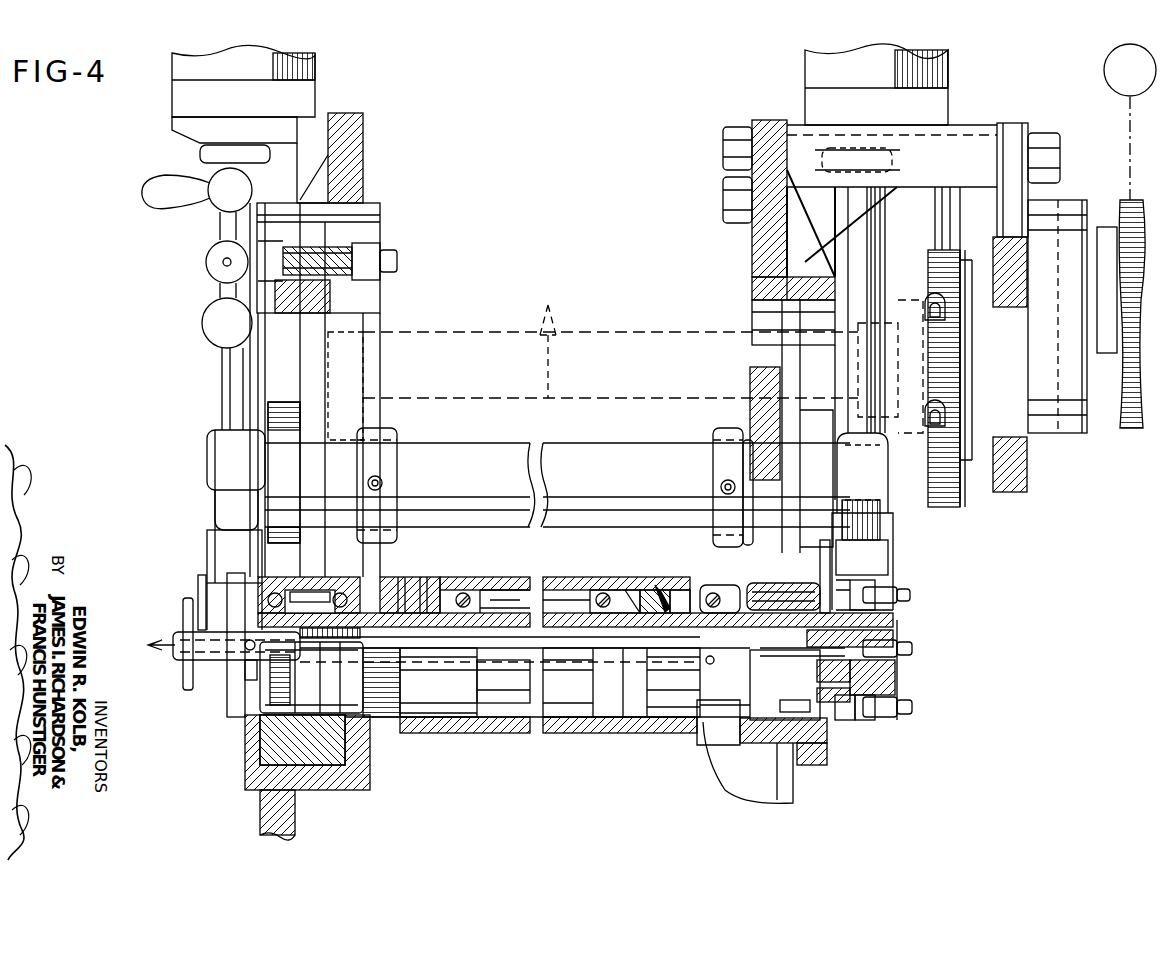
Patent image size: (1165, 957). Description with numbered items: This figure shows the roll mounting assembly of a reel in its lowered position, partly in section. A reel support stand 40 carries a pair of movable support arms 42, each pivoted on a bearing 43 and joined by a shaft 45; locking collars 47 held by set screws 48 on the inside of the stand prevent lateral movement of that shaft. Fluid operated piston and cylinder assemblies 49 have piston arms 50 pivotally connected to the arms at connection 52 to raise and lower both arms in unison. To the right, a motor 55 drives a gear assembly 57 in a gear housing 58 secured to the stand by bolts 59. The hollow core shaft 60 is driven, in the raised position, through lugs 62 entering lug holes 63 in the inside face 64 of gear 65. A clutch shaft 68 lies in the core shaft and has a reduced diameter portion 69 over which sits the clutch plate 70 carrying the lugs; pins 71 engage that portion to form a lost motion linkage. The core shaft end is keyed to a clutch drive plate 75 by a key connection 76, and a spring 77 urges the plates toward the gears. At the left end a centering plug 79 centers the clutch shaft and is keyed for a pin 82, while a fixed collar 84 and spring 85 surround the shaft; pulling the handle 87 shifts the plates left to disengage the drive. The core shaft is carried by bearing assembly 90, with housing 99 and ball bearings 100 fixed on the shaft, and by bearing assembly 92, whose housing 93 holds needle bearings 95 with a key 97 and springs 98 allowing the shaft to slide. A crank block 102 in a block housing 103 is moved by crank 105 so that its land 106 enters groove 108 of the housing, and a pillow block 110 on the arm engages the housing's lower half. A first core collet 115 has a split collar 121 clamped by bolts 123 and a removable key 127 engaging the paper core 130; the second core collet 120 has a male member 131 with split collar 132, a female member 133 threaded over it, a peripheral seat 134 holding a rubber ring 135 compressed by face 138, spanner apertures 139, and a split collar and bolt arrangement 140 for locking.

The reel support stand 40 is at (360, 130).
The movable support arms 42 is at (248, 765).
The bearing 43 is at (345, 440).
The shaft 45 is at (548, 448).
The locking collars 47 is at (385, 435).
The set screws 48 is at (380, 478).
The fluid operated piston and cylinder assemblies 49 is at (192, 65).
The piston arms 50 is at (232, 392).
The pivotal connection 52 is at (200, 590).
The motor 55 is at (1104, 68).
The gear assembly 57 is at (998, 496).
The gear housing 58 is at (1040, 215).
The bolts 59 is at (1040, 135).
The core shaft 60 is at (505, 738).
The lugs 62 is at (912, 596).
The lug holes 63 is at (925, 308).
The inside face 64 is at (935, 478).
The gear 65 is at (952, 470).
The clutch shaft 68 is at (565, 655).
The reduced diameter portion 69 is at (820, 665).
The clutch plate 70 is at (890, 720).
The pins 71 is at (815, 690).
The clutch drive plate 75 is at (850, 720).
The key connection 76 is at (895, 615).
The spring 77 is at (895, 672).
The centering plug 79 is at (262, 625).
The pin 82 is at (250, 652).
The fixed collar 84 is at (395, 635).
The spring 85 is at (340, 648).
The handle 87 is at (180, 628).
The bearing assembly 90 is at (258, 575).
The bearing assembly 92 is at (815, 585).
The housing 93 is at (806, 580).
The needle bearings 95 is at (780, 590).
The key 97 is at (790, 632).
The springs 98 is at (738, 600).
The housing 99 is at (270, 595).
The ball bearings 100 is at (300, 598).
The crank block 102 is at (340, 278).
The block housing 103 is at (345, 215).
The crank 105 is at (160, 200).
The land 106 is at (305, 305).
The groove 108 is at (363, 355).
The pillow block 110 is at (300, 760).
The first core collet 115 is at (490, 592).
The second core collet 120 is at (595, 580).
The split collar 121 is at (508, 605).
The bolts 123 is at (462, 592).
The removable key 127 is at (412, 580).
The paper core 130 is at (570, 578).
The male member 131 is at (658, 610).
The split collar 132 is at (598, 600).
The female member 133 is at (680, 592).
The peripheral seat 134 is at (630, 595).
The ring 135 is at (658, 588).
The face 138 is at (655, 590).
The apertures 139 is at (712, 730).
The split collar and bolt arrangement 140 is at (716, 572).